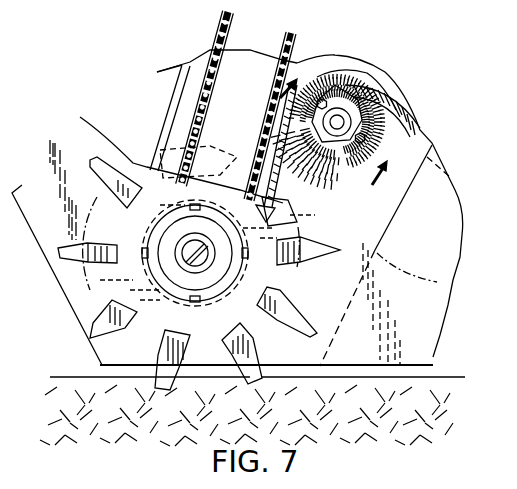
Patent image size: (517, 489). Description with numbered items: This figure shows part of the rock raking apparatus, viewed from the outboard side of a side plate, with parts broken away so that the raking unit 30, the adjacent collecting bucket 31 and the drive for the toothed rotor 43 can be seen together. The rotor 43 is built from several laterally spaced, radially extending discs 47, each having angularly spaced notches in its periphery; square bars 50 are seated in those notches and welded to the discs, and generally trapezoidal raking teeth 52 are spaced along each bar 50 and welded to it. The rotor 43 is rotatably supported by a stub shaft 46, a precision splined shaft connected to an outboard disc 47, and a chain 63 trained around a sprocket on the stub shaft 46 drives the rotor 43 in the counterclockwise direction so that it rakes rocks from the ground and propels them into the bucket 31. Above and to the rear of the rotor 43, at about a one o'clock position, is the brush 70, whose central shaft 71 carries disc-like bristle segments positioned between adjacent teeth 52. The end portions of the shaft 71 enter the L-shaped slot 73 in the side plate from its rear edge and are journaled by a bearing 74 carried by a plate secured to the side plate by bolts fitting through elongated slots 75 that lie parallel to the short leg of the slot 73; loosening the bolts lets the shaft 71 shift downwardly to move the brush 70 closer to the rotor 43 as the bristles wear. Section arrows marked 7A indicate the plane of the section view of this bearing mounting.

The raking unit 30 is at (38, 222).
The collecting bucket 31 is at (433, 245).
The toothed rotor 43 is at (144, 331).
The stub shaft 46 is at (193, 250).
The disc 47 is at (255, 323).
The square bar 50 is at (128, 185).
The raking tooth 52 is at (97, 320).
The chain 63 is at (218, 40).
The brush 70 is at (362, 82).
The central shaft 71 is at (330, 124).
The L-shaped slot 73 is at (403, 120).
The bearing 74 is at (333, 134).
The elongated slot 75 is at (321, 100).
The section line 7A is at (325, 142).